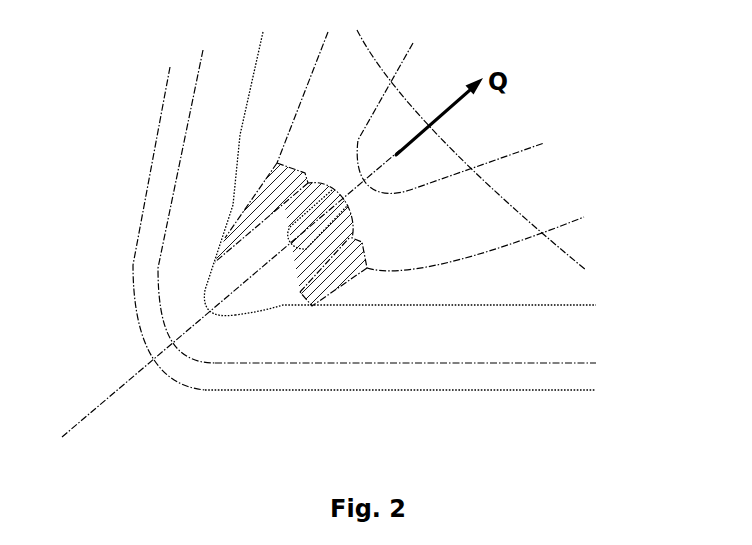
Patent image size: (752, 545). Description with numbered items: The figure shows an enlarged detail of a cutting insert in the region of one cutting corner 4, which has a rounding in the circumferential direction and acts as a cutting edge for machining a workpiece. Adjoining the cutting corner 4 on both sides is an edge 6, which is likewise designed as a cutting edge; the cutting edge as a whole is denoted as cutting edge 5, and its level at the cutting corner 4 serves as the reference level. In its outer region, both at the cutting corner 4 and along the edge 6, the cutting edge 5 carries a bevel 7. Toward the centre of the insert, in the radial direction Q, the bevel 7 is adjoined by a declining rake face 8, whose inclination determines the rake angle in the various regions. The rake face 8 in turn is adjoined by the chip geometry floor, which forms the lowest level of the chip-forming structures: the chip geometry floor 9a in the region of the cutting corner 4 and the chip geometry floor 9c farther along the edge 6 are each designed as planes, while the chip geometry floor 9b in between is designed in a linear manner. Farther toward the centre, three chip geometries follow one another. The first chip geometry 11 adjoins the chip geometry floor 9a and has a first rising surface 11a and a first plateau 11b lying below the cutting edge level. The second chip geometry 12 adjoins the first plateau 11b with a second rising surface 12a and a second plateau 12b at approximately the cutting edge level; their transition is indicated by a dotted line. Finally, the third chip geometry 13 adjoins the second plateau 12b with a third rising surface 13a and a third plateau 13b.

The cutting corner 4 is at (153, 359).
The cutting edge 5 is at (226, 402).
The edge 6 is at (293, 394).
The bevel 7 is at (263, 375).
The rake face 8 is at (277, 335).
The chip geometry floor 9a is at (243, 300).
The chip geometry floor 9b is at (302, 306).
The chip geometry floor 9c is at (374, 292).
The first chip geometry 11 is at (49, 250).
The first rising surface 11a is at (250, 262).
The first plateau 11b is at (270, 241).
The second chip geometry 12 is at (49, 188).
The second rising surface 12a is at (285, 228).
The second plateau 12b is at (310, 217).
The third chip geometry 13 is at (77, 100).
The third rising surface 13a is at (340, 173).
The third plateau 13b is at (375, 150).